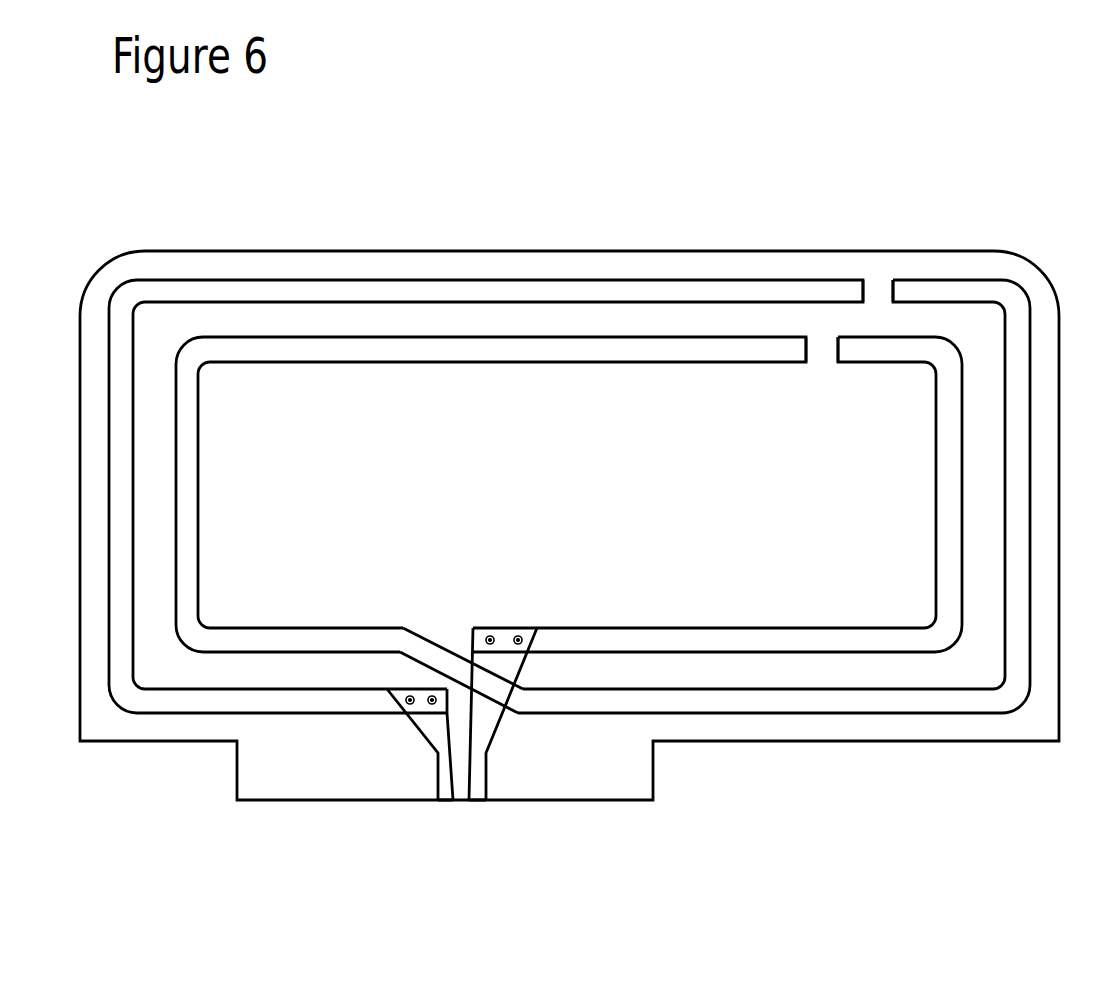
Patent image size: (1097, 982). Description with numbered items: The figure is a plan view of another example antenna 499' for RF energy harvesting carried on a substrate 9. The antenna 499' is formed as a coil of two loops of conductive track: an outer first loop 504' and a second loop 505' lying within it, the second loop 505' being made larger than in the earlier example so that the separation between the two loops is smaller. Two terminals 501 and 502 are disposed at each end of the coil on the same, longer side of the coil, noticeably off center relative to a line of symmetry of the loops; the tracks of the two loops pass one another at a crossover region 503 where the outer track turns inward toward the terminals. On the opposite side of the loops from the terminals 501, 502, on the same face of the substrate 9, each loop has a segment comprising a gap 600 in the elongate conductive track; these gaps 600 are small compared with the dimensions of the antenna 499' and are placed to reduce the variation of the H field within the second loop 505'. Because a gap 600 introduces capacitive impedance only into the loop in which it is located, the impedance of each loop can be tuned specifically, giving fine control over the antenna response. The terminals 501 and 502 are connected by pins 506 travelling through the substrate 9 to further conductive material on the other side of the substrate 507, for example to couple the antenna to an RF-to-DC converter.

The antenna 499' is at (569, 483).
The substrate 9 is at (571, 488).
The gaps 600 is at (882, 288).
The crossover section of antenna conductor 503 is at (458, 676).
The terminal 501 is at (417, 710).
The terminal 502 is at (507, 648).
The pins 506 is at (432, 695).
The first loop 504' is at (569, 556).
The second loop 505' is at (579, 584).
The other side of the substrate 507 is at (478, 790).